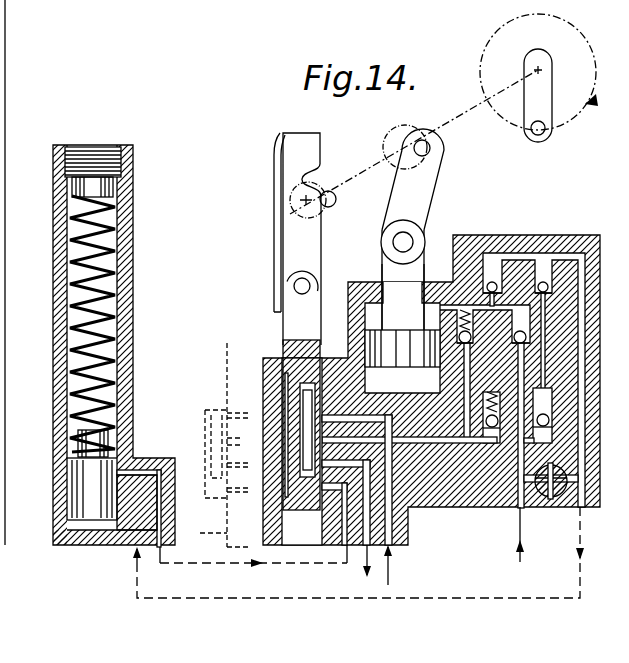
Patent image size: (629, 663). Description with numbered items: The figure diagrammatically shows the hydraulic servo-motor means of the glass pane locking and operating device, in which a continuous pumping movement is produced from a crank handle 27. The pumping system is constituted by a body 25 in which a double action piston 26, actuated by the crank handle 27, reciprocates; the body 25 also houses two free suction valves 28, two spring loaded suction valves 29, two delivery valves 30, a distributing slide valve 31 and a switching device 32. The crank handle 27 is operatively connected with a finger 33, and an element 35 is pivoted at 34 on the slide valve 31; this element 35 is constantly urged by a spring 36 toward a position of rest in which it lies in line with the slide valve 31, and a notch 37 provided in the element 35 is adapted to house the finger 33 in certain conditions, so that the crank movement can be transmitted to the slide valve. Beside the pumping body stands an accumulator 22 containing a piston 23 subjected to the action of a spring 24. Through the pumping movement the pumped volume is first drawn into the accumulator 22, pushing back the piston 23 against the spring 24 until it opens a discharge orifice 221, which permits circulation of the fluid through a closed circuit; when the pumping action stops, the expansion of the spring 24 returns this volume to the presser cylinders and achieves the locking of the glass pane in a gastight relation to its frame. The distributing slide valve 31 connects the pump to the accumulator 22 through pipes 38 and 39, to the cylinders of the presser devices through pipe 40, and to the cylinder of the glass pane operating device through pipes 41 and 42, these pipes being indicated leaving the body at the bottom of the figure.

The accumulator 22 is at (127, 251).
The discharge orifice 221 is at (127, 470).
The piston 23 is at (88, 502).
The spring 24 is at (103, 318).
The body 25 is at (473, 240).
The double action piston 26 is at (402, 338).
The crank handle 27 is at (542, 98).
The free suction valves 28 is at (549, 420).
The spring loaded suction valves 29 is at (488, 418).
The delivery valves 30 is at (543, 281).
The distributing slide valve 31 is at (295, 342).
The switching device 32 is at (558, 498).
The finger 33 is at (336, 199).
The pivot 34 is at (298, 285).
The element 35 is at (312, 235).
The spring 36 is at (277, 245).
The notch 37 is at (310, 181).
The pipe 38 is at (208, 563).
The pipe 39 is at (537, 598).
The pipe 40 is at (518, 525).
The pipe 41 is at (366, 566).
The pipe 42 is at (391, 560).